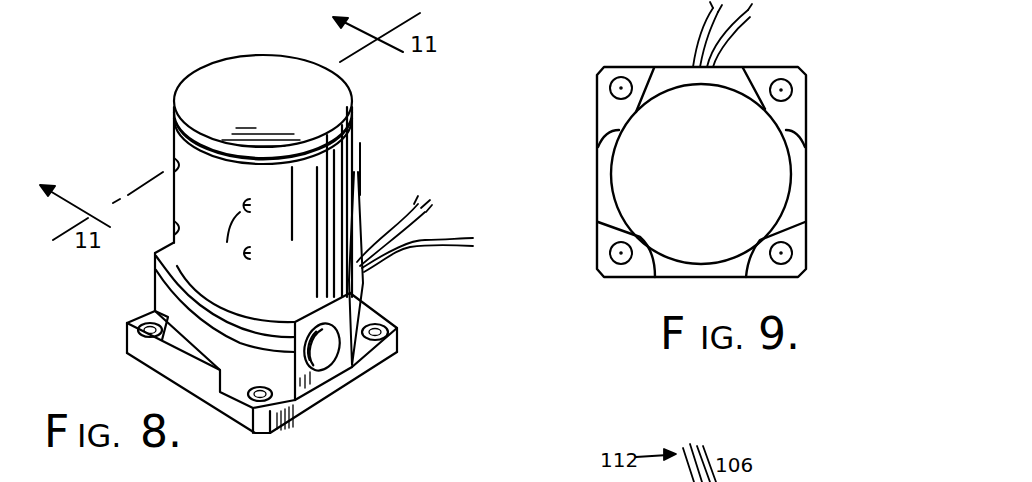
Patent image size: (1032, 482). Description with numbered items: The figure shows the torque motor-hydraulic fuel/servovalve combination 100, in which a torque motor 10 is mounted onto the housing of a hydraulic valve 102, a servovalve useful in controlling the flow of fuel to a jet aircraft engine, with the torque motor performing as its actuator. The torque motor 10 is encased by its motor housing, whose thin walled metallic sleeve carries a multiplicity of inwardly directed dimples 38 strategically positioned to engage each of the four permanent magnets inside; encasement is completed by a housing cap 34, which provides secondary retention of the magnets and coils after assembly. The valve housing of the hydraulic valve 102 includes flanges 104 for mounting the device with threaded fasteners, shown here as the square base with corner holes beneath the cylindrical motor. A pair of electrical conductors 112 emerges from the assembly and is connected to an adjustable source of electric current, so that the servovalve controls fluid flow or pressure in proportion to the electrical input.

In FIG. 8, the torque motor 10 is at (160, 103).
In FIG. 8, the housing cap 34 is at (238, 72).
In FIG. 9, the housing cap 34 is at (767, 163).
In FIG. 8, the dimples 38 is at (173, 163).
In FIG. 8, the torque motor-hydraulic fuel/servovalve combination 100 is at (380, 205).
In FIG. 9, the torque motor-hydraulic fuel/servovalve combination 100 is at (701, 172).
In FIG. 8, the hydraulic valve 102 is at (375, 295).
In FIG. 8, the flanges 104 is at (128, 337).
In FIG. 9, the flanges 104 is at (607, 82).
In FIG. 8, the electrical conductors 112 is at (438, 234).
In FIG. 9, the electrical conductors 112 is at (730, 40).